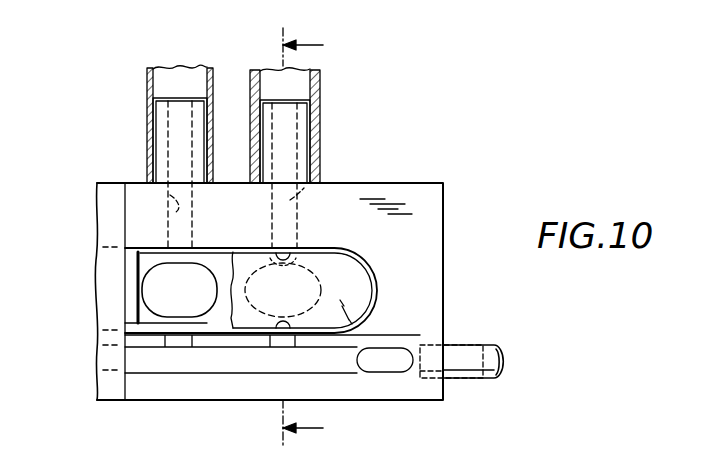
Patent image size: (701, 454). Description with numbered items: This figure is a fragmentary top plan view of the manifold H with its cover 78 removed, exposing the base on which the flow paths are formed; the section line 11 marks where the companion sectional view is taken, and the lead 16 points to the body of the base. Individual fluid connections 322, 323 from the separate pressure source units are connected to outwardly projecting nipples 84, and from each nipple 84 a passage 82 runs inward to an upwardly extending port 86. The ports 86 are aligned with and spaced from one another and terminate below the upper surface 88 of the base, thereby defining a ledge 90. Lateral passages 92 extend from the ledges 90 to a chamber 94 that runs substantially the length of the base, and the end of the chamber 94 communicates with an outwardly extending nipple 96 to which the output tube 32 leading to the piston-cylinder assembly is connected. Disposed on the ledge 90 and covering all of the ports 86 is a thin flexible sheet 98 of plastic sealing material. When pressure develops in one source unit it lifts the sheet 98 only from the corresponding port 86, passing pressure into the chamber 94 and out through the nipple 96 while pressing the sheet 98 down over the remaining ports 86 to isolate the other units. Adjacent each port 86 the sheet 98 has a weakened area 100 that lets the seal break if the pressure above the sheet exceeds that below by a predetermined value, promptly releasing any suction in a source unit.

The manifold H is at (448, 217).
The cover 78 is at (104, 210).
The individual fluid connection 322 is at (147, 78).
The individual fluid connection 323 is at (320, 80).
The output tube 32 is at (497, 345).
The nipple 84 is at (162, 114).
The passage 82 is at (168, 195).
The section line 11 is at (319, 237).
The upper surface 88 is at (413, 256).
The thin flexible sheet 98 is at (360, 287).
The port 86 is at (209, 279).
The weakened area 100 is at (288, 253).
The base 16 is at (428, 292).
The ledge 90 is at (138, 322).
The lateral passage 92 is at (168, 347).
The chamber 94 is at (196, 360).
The nipple 96 is at (467, 350).